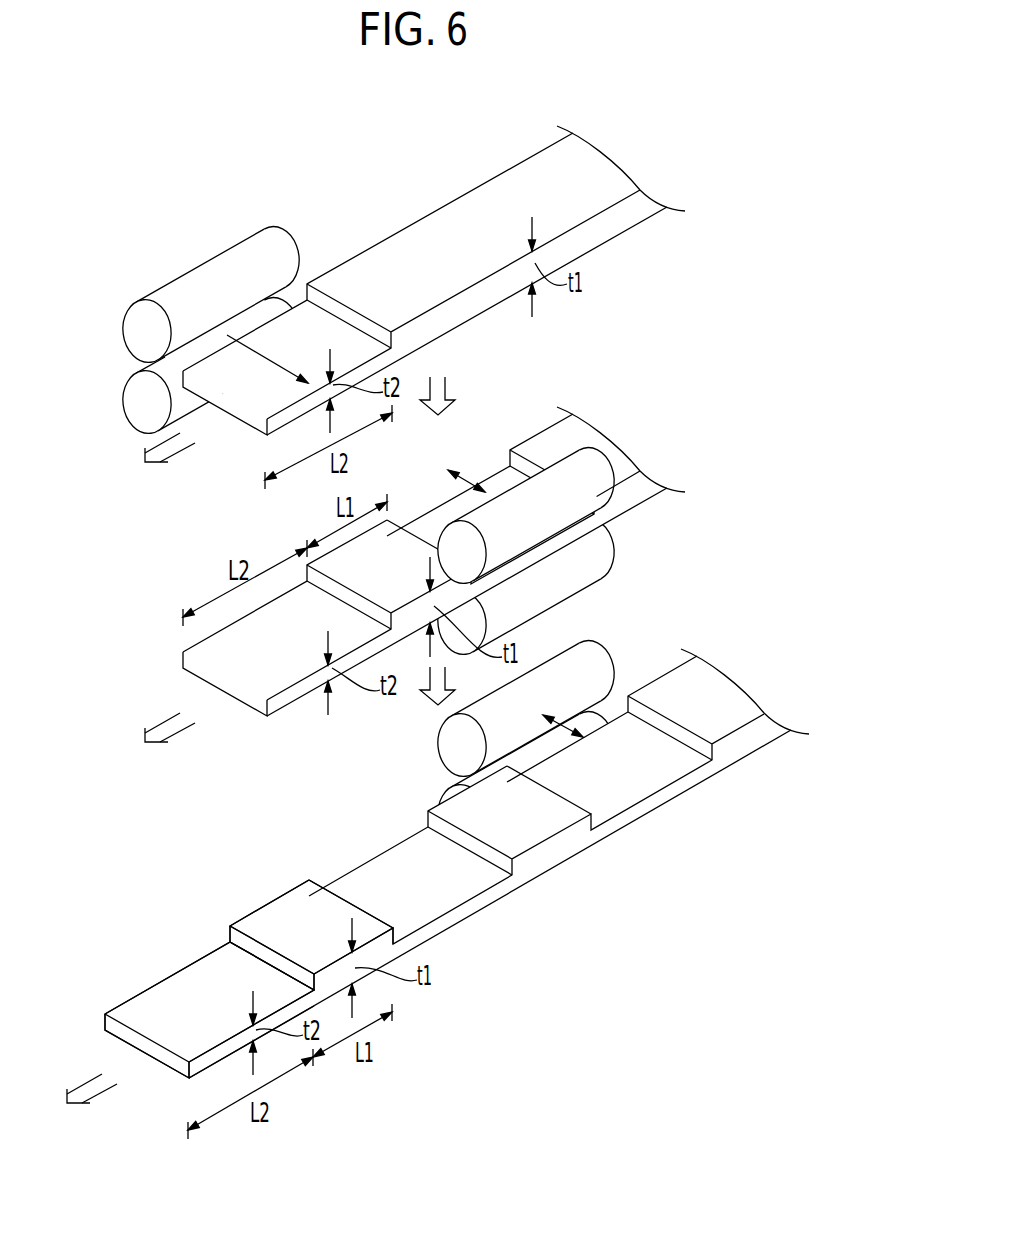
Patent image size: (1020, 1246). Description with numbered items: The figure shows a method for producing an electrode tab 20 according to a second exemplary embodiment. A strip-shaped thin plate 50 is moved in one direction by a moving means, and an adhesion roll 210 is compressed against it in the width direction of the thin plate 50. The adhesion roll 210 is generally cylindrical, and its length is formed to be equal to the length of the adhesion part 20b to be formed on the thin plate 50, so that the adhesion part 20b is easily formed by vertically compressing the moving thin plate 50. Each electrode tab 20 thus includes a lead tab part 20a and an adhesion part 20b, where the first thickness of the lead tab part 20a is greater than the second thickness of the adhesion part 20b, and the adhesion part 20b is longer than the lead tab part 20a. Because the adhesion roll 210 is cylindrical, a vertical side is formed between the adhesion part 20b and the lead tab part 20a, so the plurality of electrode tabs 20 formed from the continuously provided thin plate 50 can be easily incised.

The strip-shaped thin plate 50 is at (434, 198).
The adhesion roll 210 is at (180, 272).
The electrode tab 20 is at (457, 863).
The lead tab part 20a is at (280, 913).
The adhesion part 20b is at (209, 986).